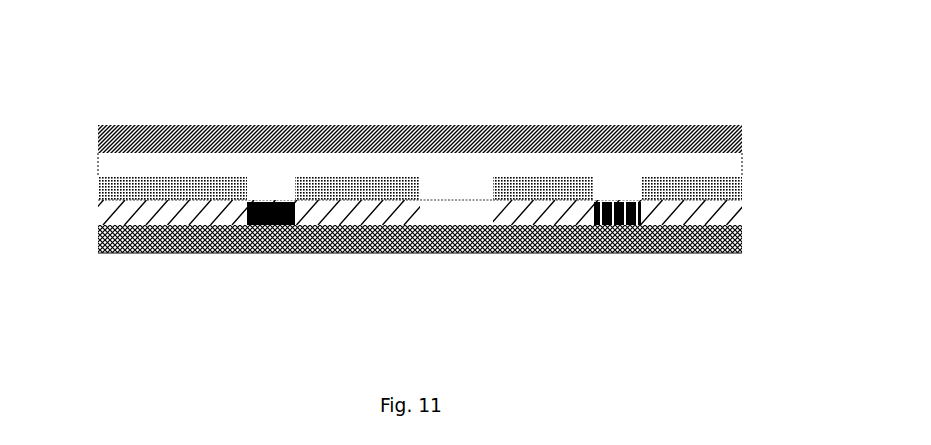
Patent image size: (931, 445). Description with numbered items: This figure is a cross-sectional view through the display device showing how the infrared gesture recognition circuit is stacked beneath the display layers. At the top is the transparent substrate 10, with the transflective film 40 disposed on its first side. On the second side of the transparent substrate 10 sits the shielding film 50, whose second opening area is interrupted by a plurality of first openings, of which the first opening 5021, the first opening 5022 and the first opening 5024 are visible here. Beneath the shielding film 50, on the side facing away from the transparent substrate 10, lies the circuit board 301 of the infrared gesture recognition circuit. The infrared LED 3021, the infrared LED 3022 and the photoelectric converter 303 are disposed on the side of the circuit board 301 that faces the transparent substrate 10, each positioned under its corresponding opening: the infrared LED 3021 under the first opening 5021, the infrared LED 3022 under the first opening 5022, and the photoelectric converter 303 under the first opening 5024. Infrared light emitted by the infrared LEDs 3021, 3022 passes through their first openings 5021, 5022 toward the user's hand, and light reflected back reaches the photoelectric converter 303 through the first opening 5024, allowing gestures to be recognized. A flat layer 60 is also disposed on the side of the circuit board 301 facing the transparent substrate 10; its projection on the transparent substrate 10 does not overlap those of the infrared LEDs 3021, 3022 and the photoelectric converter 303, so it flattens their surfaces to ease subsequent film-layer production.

The transparent substrate 10 is at (703, 163).
The transflective film 40 is at (250, 125).
The shielding film 50 is at (98, 183).
The first opening 5021 is at (268, 192).
The first opening 5022 is at (608, 192).
The first opening 5024 is at (448, 192).
The flat layer 60 is at (353, 253).
The circuit board 301 is at (692, 253).
The photoelectric converter 303 is at (458, 253).
The infrared LED 3021 is at (235, 253).
The infrared LED 3022 is at (630, 253).